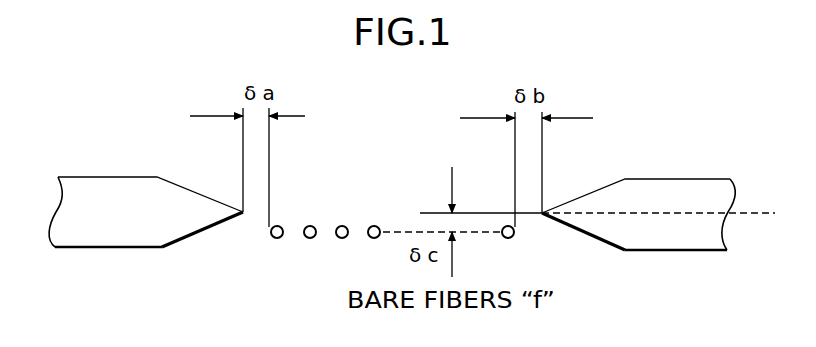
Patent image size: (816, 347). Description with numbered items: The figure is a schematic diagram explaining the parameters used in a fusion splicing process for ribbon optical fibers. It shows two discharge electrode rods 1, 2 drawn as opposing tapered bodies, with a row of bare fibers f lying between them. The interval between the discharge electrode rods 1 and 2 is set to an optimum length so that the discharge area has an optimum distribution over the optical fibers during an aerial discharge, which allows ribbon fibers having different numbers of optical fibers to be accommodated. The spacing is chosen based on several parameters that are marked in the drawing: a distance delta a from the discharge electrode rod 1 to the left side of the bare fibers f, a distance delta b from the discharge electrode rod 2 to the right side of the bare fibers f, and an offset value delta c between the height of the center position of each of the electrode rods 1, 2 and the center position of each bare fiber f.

The discharge electrode rod 1 is at (110, 249).
The discharge electrode rod 2 is at (673, 251).
The bare fibers f is at (374, 238).